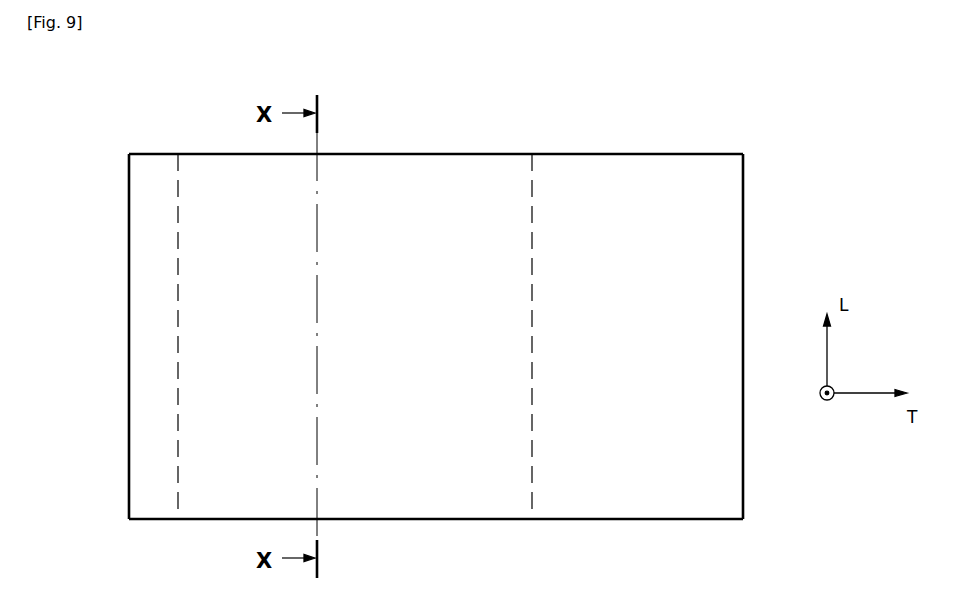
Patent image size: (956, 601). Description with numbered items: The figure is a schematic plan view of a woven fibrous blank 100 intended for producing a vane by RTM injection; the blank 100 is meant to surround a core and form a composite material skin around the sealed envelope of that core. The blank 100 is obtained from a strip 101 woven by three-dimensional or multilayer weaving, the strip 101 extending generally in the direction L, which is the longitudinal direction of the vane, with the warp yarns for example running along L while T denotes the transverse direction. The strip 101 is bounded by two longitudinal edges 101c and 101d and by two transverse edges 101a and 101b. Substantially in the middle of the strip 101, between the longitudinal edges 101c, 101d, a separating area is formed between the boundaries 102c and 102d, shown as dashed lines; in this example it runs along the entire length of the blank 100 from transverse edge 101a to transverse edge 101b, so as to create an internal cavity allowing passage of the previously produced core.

The fibrous blank 100 is at (817, 133).
The strip 101 is at (590, 181).
The transverse edge 101a is at (385, 153).
The transverse edge 101b is at (385, 521).
The longitudinal edge 101c is at (129, 335).
The longitudinal edge 101d is at (744, 196).
The boundary 102c is at (179, 185).
The boundary 102d is at (531, 185).